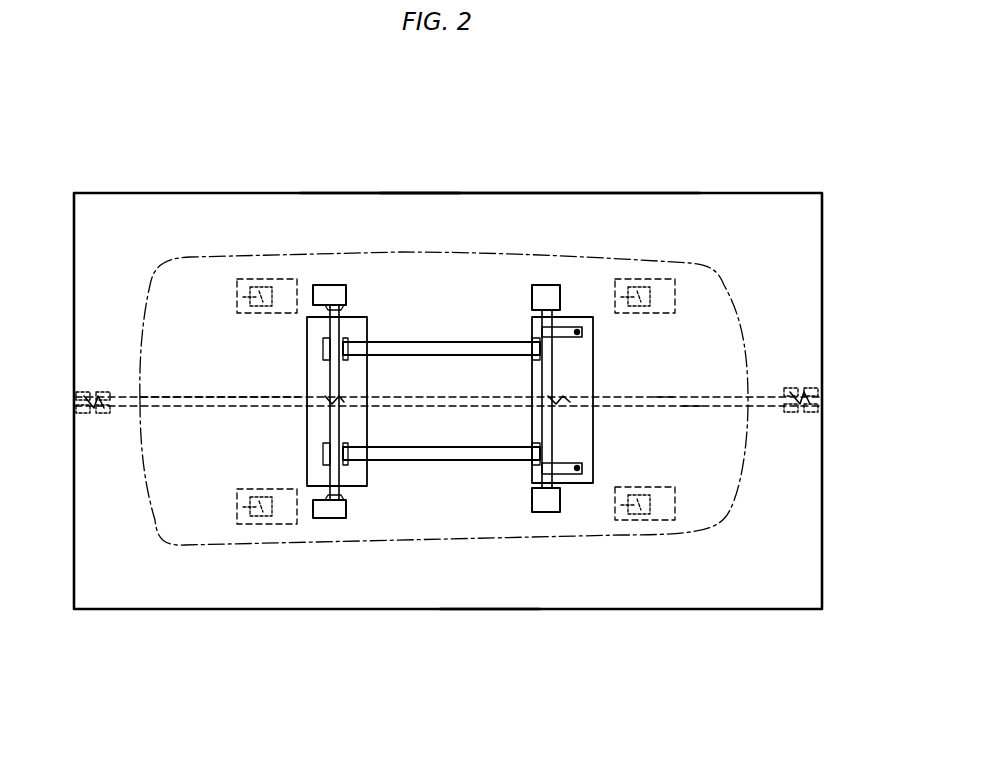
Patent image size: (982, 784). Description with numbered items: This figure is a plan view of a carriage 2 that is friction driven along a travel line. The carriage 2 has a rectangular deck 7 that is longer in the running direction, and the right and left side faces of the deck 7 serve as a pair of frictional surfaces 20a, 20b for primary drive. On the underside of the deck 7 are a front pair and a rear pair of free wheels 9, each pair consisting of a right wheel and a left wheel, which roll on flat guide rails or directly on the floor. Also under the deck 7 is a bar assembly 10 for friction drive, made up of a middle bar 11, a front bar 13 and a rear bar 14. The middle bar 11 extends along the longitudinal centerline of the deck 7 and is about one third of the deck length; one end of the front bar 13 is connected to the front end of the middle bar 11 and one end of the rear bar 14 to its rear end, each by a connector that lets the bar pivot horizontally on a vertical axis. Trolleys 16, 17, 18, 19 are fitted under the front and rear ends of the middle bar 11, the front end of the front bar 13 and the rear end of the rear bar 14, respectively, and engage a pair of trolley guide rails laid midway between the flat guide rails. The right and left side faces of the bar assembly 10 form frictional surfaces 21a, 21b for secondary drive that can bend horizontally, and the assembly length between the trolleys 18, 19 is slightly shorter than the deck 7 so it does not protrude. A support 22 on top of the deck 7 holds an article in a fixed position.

The carriage 2 is at (495, 192).
The deck 7 is at (420, 585).
The free wheels 9 is at (244, 283).
The bar assembly 10 is at (715, 397).
The middle bar 11 is at (448, 406).
The front bar 13 is at (760, 397).
The rear bar 14 is at (190, 400).
The trolley 16 is at (563, 400).
The trolley 17 is at (333, 400).
The trolley 18 is at (797, 412).
The trolley 19 is at (92, 413).
The frictional surface 20a is at (490, 609).
The frictional surface 20b is at (420, 192).
The frictional surface 21a is at (693, 406).
The frictional surface 21b is at (665, 395).
The support 22 is at (562, 284).